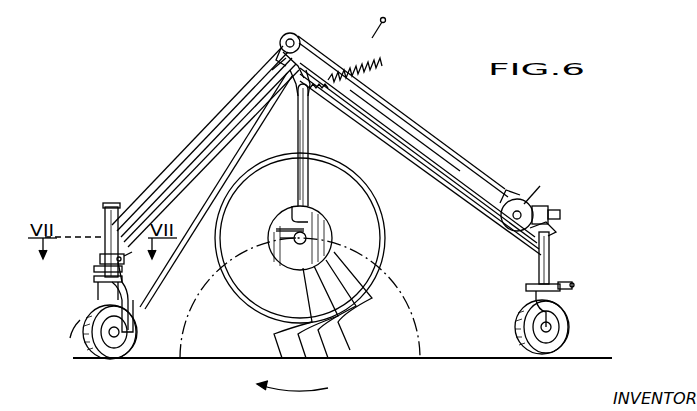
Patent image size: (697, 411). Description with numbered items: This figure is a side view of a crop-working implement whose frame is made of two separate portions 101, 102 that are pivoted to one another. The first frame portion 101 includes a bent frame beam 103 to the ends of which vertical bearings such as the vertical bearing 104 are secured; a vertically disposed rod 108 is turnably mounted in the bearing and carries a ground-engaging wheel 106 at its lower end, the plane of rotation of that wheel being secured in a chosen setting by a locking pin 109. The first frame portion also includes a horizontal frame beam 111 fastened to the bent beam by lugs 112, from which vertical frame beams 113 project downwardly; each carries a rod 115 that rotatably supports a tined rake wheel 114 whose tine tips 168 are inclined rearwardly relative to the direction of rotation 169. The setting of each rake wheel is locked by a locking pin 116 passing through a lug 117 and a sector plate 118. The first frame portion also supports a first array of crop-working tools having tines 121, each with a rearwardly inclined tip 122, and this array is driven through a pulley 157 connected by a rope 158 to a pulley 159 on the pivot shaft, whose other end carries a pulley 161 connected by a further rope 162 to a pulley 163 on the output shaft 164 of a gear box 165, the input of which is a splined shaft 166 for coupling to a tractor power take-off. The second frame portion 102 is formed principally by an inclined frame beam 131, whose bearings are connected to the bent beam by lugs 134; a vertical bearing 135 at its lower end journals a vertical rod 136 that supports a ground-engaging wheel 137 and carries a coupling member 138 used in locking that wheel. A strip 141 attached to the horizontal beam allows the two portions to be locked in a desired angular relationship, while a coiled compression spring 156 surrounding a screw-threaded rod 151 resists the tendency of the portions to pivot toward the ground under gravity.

The frame portion 101 is at (165, 172).
The frame portion 102 is at (418, 136).
The bent frame beam 103 is at (198, 140).
The vertical bearing 104 is at (104, 226).
The ground-engaging wheel 106 is at (136, 344).
The vertically disposed rod 108 is at (94, 290).
The locking pin 109 is at (98, 264).
The horizontal frame beam 111 is at (310, 108).
The lugs 112 is at (296, 92).
The vertical frame beam 113 is at (305, 172).
The rake wheel 114 is at (406, 262).
The rod 115 is at (308, 242).
The locking pin 116 is at (292, 212).
The lug 117 is at (278, 226).
The sector plate 118 is at (280, 238).
The tines 121 is at (138, 318).
The tip 122 is at (72, 326).
The inclined frame beam 131 is at (494, 186).
The lugs 134 is at (276, 64).
The vertical bearing 135 is at (548, 251).
The vertical rod 136 is at (528, 288).
The ground-engaging wheel 137 is at (569, 327).
The coupling member 138 is at (564, 290).
The strip 141 is at (340, 93).
The screw-threaded rod 151 is at (366, 50).
The coiled compression spring 156 is at (372, 30).
The pulley 157 is at (126, 292).
The rope 158 is at (142, 290).
The pulley 159 is at (282, 36).
The pulley 161 is at (297, 36).
The rope 162 is at (382, 101).
The pulley 163 is at (540, 186).
The shaft 164 is at (520, 208).
The gear box 165 is at (536, 206).
The splined shaft 166 is at (560, 215).
The tine tips 168 is at (358, 338).
The direction of rotation 169 is at (292, 396).